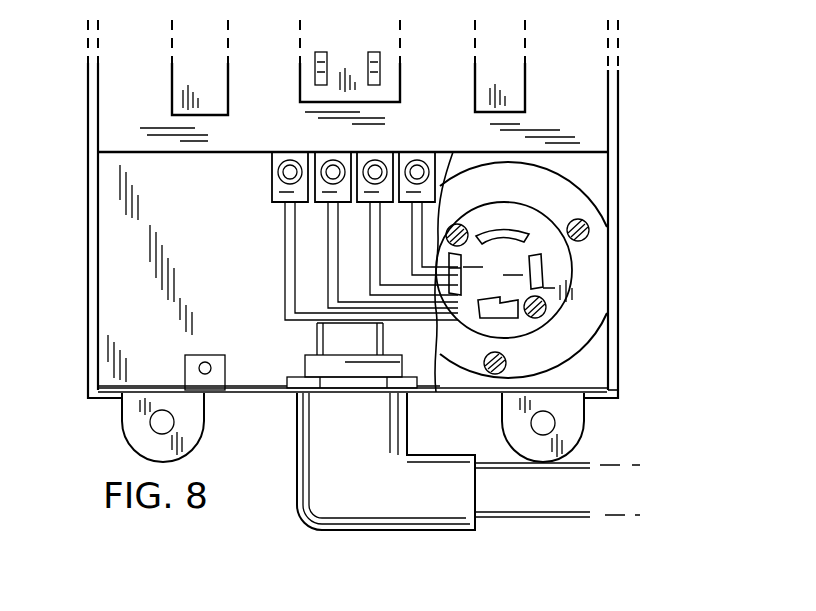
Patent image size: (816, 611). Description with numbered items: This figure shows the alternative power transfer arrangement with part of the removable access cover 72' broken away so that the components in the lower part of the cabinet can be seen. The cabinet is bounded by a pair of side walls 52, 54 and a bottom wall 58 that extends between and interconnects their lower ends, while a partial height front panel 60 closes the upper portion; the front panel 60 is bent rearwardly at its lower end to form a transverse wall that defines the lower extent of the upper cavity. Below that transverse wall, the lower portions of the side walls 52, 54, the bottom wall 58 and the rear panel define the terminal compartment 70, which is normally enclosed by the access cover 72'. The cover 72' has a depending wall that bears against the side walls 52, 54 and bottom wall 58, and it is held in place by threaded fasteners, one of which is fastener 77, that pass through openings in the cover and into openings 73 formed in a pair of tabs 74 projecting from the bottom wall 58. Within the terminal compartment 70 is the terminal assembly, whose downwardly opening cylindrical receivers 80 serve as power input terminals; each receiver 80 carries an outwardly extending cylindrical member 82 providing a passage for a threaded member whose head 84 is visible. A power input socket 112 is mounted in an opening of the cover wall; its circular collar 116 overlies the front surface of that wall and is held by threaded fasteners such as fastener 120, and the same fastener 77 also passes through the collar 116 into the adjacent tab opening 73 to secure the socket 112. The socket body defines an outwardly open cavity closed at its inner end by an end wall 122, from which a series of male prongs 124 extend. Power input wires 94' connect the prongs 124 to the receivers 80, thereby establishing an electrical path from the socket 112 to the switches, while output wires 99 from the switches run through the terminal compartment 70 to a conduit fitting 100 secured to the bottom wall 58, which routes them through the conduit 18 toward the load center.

The conduit 18 is at (522, 502).
The side wall 52 is at (130, 120).
The side wall 54 is at (620, 248).
The bottom wall 58 is at (255, 390).
The front panel 60 is at (584, 115).
The terminal compartment 70 is at (135, 300).
The removable access cover 72' is at (389, 277).
The opening 73 is at (200, 366).
The tab 74 is at (220, 360).
The threaded fastener 77 is at (487, 367).
The cylindrical receiver 80 is at (272, 186).
The cylindrical member 82 is at (413, 162).
The head of threaded member 84 is at (274, 162).
The power input wires 94' is at (342, 261).
The output wires 99 is at (387, 332).
The conduit fitting 100 is at (348, 497).
The power input socket 112 is at (606, 265).
The circular collar 116 is at (567, 340).
The threaded fastener 120 is at (587, 219).
The end wall 122 is at (555, 263).
The male prongs 124 is at (520, 218).